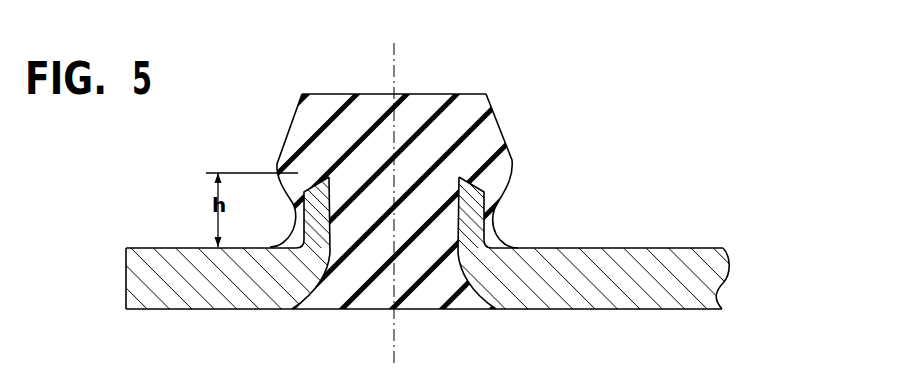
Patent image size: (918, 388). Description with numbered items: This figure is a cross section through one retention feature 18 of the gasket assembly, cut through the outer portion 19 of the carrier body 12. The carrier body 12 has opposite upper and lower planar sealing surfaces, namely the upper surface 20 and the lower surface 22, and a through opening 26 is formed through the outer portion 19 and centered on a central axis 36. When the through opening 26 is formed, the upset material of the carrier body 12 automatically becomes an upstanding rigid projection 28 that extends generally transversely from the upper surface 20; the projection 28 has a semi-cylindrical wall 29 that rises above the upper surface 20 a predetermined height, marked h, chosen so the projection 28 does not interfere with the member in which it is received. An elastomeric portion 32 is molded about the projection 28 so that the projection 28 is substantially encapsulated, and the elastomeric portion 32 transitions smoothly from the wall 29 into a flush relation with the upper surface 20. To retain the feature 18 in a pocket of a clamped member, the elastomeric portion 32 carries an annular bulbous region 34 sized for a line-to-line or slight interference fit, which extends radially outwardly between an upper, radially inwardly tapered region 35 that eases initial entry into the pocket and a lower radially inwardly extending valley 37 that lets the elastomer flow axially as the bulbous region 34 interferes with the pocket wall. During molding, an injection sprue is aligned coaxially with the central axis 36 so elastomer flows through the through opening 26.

The carrier body 12 is at (414, 267).
The feature 18 is at (400, 206).
The outer portion 19 is at (695, 263).
The upper surface 20 is at (176, 247).
The lower surface 22 is at (193, 310).
The through opening 26 is at (462, 272).
The projection 28 is at (408, 224).
The semi-cylindrical wall 29 is at (472, 202).
The elastomeric portion 32 is at (512, 153).
The bulbous region 34 is at (412, 153).
The tapered region 35 is at (292, 120).
The central axis 36 is at (396, 50).
The valley 37 is at (290, 222).